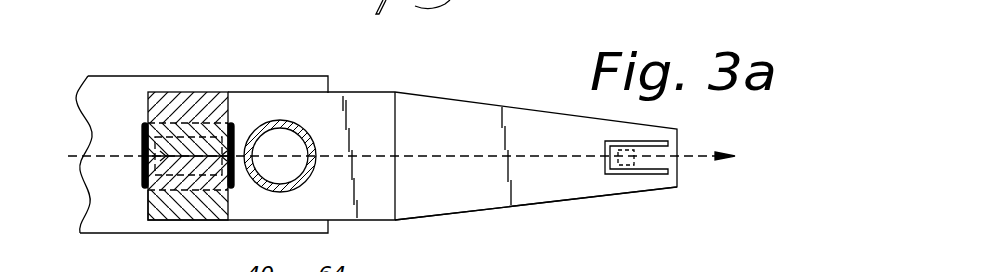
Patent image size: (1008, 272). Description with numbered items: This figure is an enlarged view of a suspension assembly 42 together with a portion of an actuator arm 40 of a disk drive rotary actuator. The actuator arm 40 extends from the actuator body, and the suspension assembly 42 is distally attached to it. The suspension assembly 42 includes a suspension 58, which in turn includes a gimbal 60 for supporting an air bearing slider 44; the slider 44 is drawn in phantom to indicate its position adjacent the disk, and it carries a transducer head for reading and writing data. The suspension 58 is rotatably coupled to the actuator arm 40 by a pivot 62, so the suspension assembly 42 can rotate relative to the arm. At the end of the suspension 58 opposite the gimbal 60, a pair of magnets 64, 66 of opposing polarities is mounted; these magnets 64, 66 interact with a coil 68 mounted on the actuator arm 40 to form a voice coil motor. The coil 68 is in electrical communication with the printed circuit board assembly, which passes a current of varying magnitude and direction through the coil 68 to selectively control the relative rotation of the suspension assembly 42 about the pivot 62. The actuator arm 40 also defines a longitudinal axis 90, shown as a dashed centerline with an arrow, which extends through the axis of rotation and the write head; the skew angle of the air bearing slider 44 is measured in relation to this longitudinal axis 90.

The actuator arm 40 is at (118, 83).
The suspension assembly 42 is at (435, 106).
The air bearing slider 44 is at (626, 165).
The suspension 58 is at (457, 207).
The gimbal 60 is at (650, 164).
The pivot 62 is at (290, 184).
The magnet 64 is at (165, 104).
The magnet 66 is at (148, 203).
The coil 68 is at (142, 149).
The longitudinal axis 90 is at (696, 152).